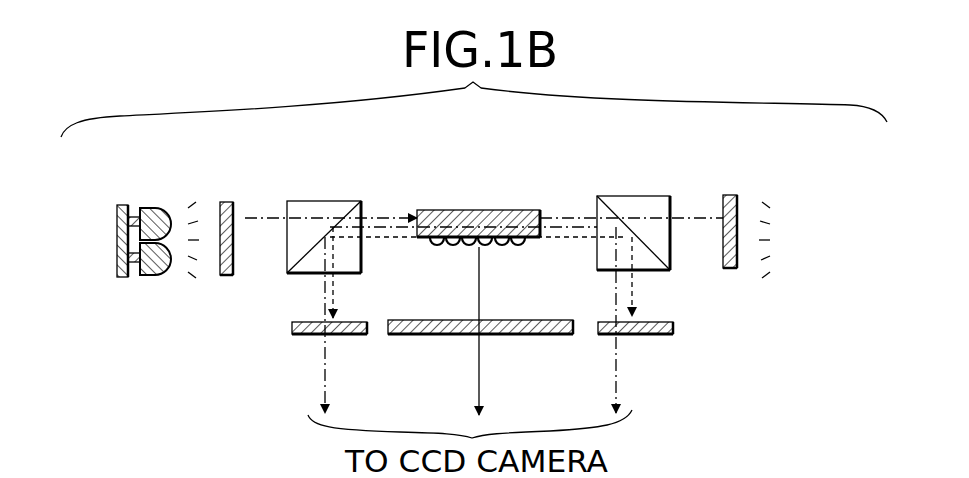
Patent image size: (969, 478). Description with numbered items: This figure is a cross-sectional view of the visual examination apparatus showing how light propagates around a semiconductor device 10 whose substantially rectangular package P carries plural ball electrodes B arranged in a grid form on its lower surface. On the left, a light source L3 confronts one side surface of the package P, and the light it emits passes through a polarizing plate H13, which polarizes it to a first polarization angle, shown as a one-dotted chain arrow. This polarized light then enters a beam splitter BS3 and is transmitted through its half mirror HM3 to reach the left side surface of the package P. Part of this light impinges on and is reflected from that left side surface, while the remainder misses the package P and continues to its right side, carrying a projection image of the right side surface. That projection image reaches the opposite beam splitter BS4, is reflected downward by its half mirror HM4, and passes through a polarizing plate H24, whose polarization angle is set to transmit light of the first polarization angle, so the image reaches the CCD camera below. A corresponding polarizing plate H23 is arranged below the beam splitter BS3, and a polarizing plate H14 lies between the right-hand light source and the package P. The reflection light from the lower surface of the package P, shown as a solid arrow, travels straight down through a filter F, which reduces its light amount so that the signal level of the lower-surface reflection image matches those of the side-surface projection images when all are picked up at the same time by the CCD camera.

The light source L3 is at (149, 206).
The polarizing plate H13 is at (228, 202).
The beam splitter BS3 is at (301, 231).
The half mirror HM3 is at (291, 269).
The semiconductor device 10 is at (471, 207).
The package P is at (482, 210).
The ball electrodes B is at (436, 250).
The beam splitter BS4 is at (658, 223).
The polarizing plate H14 is at (508, 266).
The half mirror HM4 is at (669, 258).
The polarizing plate H23 is at (300, 336).
The filter F is at (424, 335).
The polarizing plate H24 is at (655, 336).